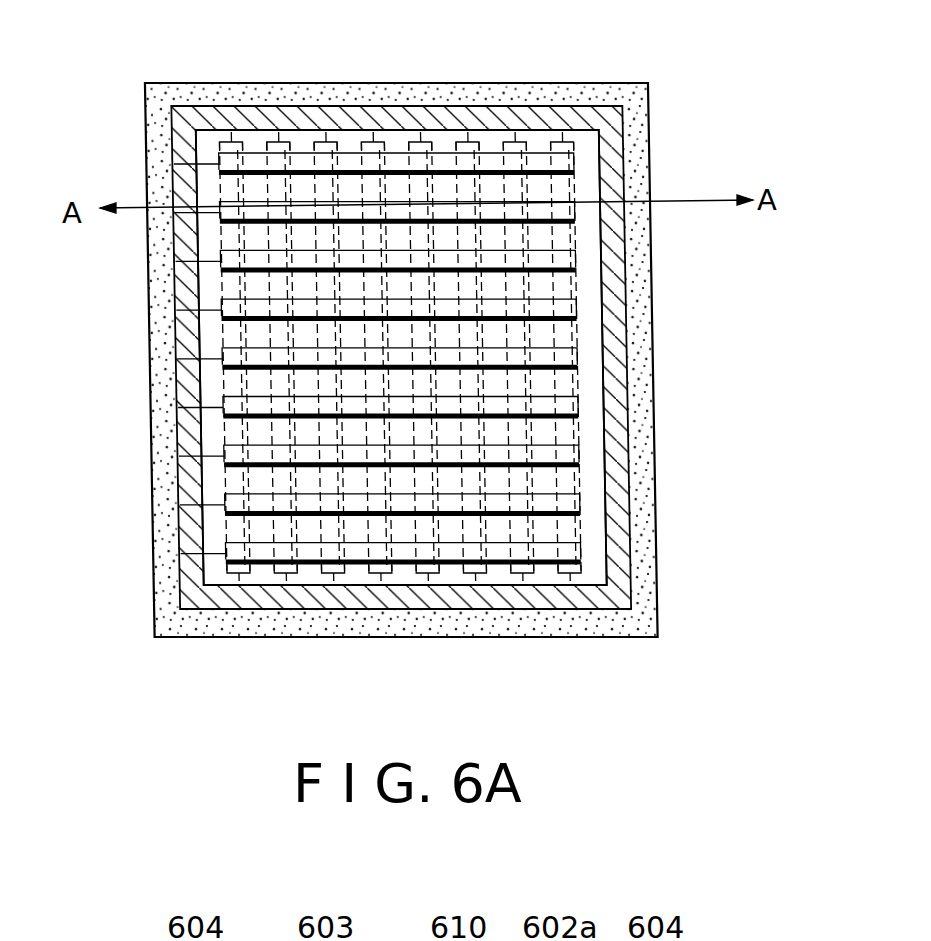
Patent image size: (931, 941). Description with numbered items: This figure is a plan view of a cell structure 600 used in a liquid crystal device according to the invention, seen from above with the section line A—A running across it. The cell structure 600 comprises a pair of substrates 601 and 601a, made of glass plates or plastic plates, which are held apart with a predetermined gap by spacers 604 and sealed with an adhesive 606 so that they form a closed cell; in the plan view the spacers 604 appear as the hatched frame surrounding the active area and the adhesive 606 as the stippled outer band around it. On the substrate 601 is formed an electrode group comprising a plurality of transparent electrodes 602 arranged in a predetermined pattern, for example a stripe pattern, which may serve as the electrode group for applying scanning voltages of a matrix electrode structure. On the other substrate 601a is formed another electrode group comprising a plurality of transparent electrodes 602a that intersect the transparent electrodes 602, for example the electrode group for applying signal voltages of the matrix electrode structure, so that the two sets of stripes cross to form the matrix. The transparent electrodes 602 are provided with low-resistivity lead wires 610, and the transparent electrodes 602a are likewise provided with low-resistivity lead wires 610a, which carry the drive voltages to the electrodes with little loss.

The cell structure 600 is at (475, 27).
The substrate 601 is at (514, 346).
The substrate 601a is at (588, 158).
The transparent electrodes 602 is at (560, 232).
The transparent electrodes 602a is at (300, 160).
The spacers 604 is at (543, 104).
The adhesive 606 is at (645, 538).
The low-resistivity lead wires 610 is at (566, 478).
The low-resistivity lead wires 610a is at (543, 566).